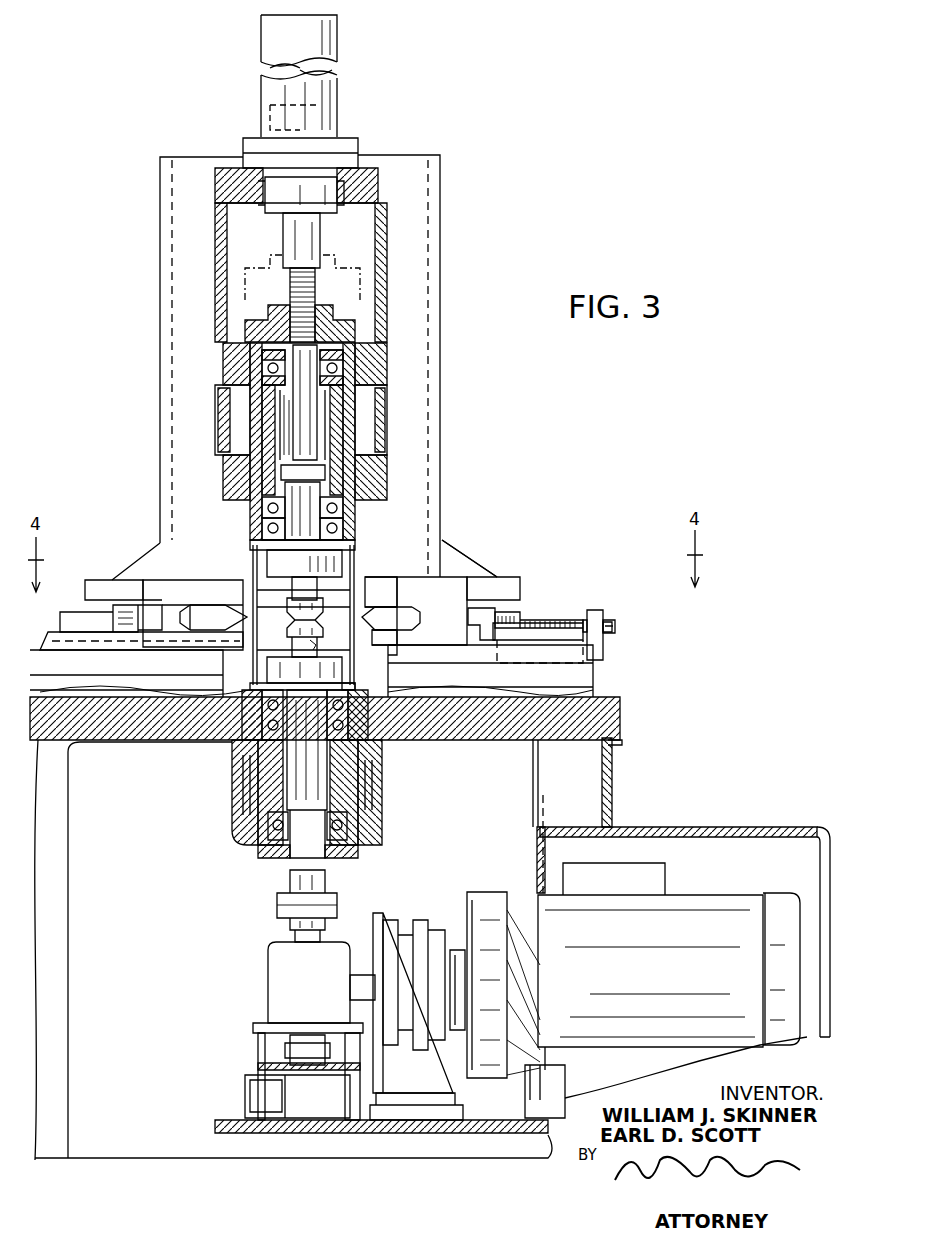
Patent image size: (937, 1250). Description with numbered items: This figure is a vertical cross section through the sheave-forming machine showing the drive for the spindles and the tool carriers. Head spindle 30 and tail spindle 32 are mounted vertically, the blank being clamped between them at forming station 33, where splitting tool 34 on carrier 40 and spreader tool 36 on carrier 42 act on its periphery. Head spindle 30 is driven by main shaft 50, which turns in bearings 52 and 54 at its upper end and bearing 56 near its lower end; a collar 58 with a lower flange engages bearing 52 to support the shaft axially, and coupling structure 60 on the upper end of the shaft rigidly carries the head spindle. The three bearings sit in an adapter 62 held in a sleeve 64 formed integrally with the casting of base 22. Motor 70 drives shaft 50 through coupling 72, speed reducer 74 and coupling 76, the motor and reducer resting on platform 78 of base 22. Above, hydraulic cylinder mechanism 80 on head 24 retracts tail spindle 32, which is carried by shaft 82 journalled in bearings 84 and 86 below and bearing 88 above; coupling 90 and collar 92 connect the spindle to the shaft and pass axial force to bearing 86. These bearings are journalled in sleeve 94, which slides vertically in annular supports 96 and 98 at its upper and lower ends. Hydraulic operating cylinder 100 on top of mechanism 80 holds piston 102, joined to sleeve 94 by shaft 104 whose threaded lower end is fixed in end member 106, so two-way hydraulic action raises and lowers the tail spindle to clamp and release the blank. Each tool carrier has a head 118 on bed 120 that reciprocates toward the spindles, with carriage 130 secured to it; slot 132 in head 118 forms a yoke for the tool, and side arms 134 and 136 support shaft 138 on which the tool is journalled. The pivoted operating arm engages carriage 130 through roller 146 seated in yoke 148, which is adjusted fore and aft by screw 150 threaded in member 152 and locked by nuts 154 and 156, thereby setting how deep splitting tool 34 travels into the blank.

The base 22 is at (610, 760).
The head 24 is at (170, 236).
The head spindle 30 is at (325, 648).
The tail spindle 32 is at (320, 590).
The forming station 33 is at (318, 618).
The splitting tool 34 is at (388, 612).
The spreader tool 36 is at (230, 612).
The carrier 40 is at (510, 578).
The carrier 42 is at (108, 580).
The main shaft 50 is at (314, 769).
The bearing 52 is at (268, 700).
The bearing 54 is at (348, 712).
The bearing 56 is at (350, 830).
The collar 58 is at (356, 685).
The coupling structure 60 is at (275, 675).
The adapter 62 is at (345, 790).
The sleeve 64 is at (240, 822).
The motor 70 is at (666, 983).
The coupling 72 is at (415, 925).
The speed reducer 74 is at (283, 990).
The coupling 76 is at (277, 905).
The platform 78 is at (462, 1135).
The hydraulic cylinder mechanism 80 is at (392, 322).
The shaft 82 is at (312, 425).
The bearing 84 is at (345, 508).
The bearing 86 is at (345, 528).
The bearing 88 is at (345, 370).
The coupling 90 is at (272, 560).
The collar 92 is at (250, 543).
The sleeve 94 is at (362, 470).
The annular support 96 is at (235, 368).
The annular support 98 is at (235, 497).
The hydraulic operating cylinder 100 is at (312, 39).
The piston 102 is at (340, 108).
The shaft 104 is at (292, 243).
The end member 106 is at (250, 326).
The head 118 is at (178, 624).
The bed 120 is at (585, 678).
The carriage 130 is at (540, 628).
The slot 132 is at (465, 570).
The side arm 134 is at (380, 590).
The side arm 136 is at (398, 646).
The shaft 138 is at (395, 634).
The roller 146 is at (500, 620).
The yoke 148 is at (570, 652).
The screw 150 is at (600, 612).
The member 152 is at (606, 638).
The nut 154 is at (600, 620).
The nut 156 is at (614, 628).